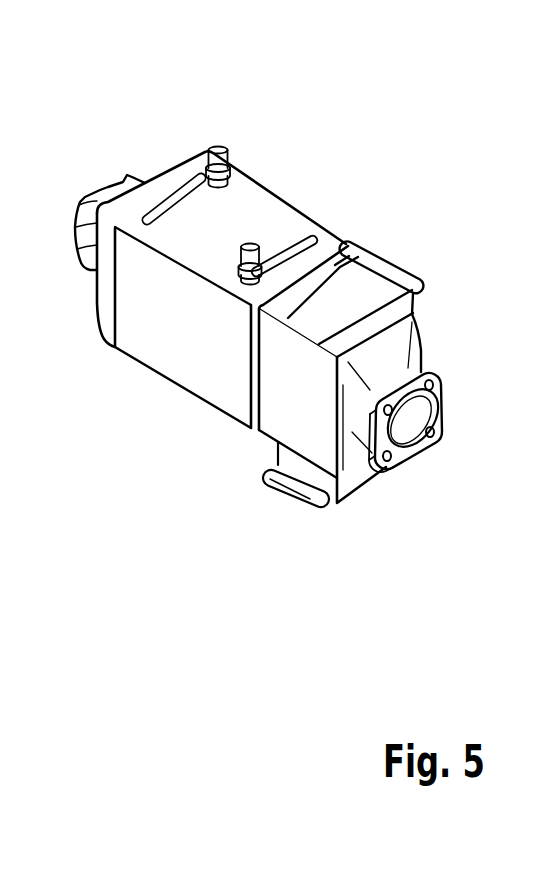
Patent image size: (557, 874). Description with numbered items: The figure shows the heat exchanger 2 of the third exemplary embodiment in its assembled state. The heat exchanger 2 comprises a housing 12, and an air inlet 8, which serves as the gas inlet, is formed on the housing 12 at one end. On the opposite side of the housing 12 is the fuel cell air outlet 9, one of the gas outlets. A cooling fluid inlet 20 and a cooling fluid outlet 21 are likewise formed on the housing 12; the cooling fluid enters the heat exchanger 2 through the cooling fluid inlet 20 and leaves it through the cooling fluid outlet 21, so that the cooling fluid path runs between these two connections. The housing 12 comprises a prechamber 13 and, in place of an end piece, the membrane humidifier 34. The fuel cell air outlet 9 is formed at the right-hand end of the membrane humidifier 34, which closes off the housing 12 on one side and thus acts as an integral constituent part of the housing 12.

The heat exchanger 2 is at (468, 80).
The air inlet 8 is at (92, 194).
The fuel cell air outlet 9 is at (418, 412).
The housing 12 is at (36, 373).
The prechamber 13 is at (188, 167).
The cooling fluid inlet 20 is at (218, 147).
The cooling fluid outlet 21 is at (252, 246).
The membrane humidifier 34 is at (380, 282).